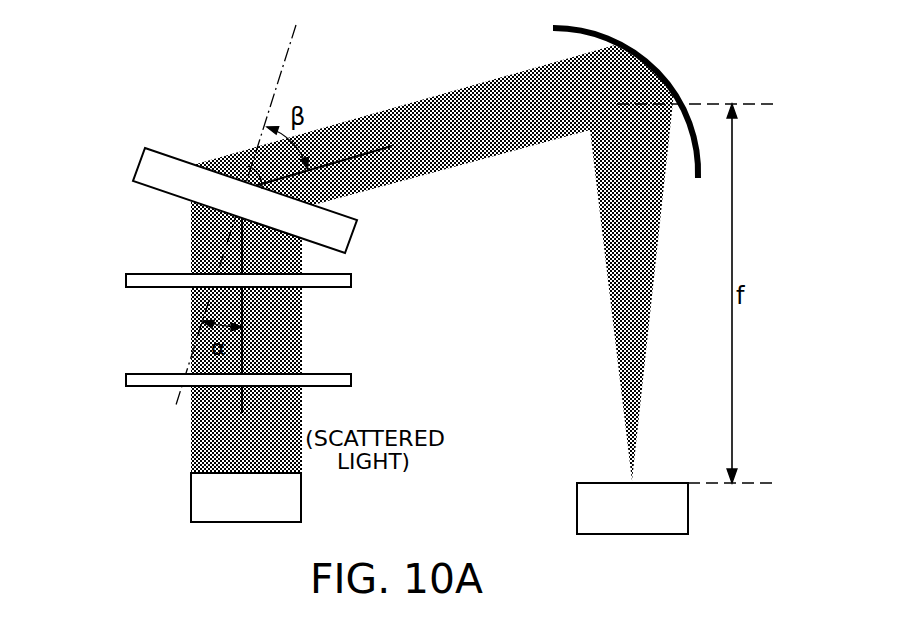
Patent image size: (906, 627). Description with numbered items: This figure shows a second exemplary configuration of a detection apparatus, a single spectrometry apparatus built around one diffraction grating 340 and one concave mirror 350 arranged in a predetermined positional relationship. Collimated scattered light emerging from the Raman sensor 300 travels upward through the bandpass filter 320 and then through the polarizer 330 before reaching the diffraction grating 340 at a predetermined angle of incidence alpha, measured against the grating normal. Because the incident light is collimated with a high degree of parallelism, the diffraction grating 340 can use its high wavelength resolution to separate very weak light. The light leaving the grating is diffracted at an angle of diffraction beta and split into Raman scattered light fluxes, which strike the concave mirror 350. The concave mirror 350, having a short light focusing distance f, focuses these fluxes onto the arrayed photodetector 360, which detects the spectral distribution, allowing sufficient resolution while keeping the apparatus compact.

The Raman sensor 300 is at (191, 497).
The bandpass filter 320 is at (126, 379).
The polarizer 330 is at (126, 282).
The diffraction grating 340 is at (138, 165).
The concave mirror 350 is at (635, 49).
The arrayed photodetector 360 is at (577, 510).